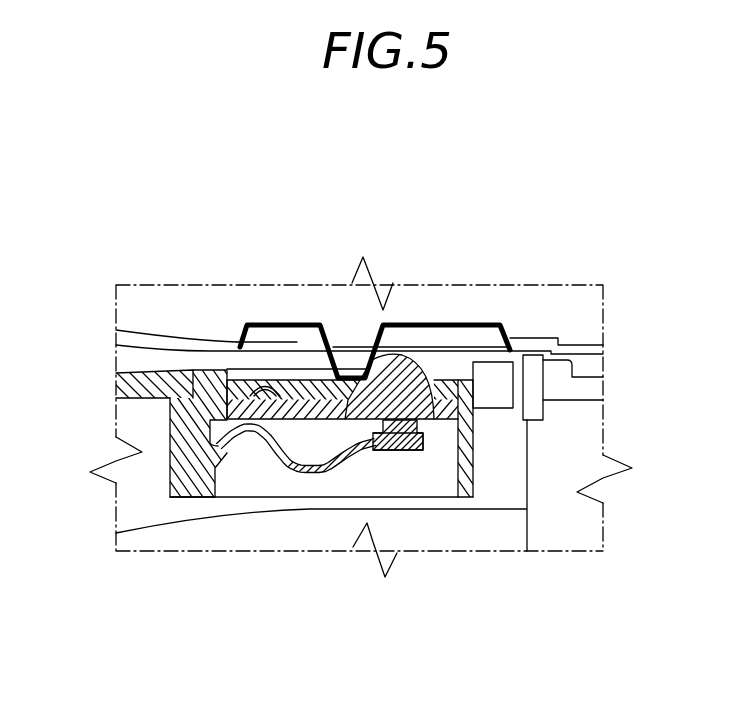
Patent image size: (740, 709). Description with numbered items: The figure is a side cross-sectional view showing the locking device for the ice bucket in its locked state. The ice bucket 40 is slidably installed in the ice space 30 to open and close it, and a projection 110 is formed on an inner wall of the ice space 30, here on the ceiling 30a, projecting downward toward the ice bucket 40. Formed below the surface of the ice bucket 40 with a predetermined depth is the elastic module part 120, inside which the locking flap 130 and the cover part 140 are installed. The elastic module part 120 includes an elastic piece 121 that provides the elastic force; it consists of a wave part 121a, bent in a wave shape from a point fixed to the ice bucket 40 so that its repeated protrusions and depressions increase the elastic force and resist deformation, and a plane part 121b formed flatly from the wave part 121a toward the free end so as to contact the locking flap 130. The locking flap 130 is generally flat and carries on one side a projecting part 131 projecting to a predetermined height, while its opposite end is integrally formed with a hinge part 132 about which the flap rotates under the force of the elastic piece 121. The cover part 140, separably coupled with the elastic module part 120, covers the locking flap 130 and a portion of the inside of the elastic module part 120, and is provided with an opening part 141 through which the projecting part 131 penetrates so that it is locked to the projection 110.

The ice space 30 is at (229, 300).
The ceiling of the ice space 30a is at (165, 330).
The cover part 140 is at (272, 390).
The opening part 141 is at (356, 386).
The locking flap 130 is at (295, 388).
The hinge part 132 is at (230, 408).
The projection 110 is at (396, 378).
The projecting part 131 is at (440, 365).
The elastic module part 120 is at (196, 467).
The ice bucket 40 is at (240, 507).
The elastic piece 121 is at (413, 627).
The wave part 121a is at (263, 447).
The plane part 121b is at (395, 450).